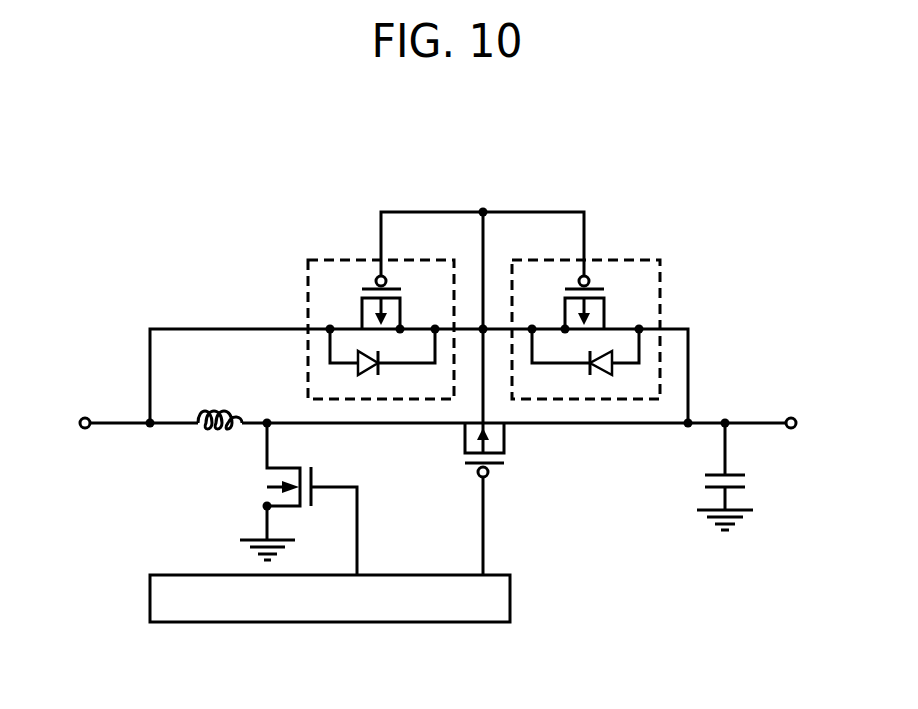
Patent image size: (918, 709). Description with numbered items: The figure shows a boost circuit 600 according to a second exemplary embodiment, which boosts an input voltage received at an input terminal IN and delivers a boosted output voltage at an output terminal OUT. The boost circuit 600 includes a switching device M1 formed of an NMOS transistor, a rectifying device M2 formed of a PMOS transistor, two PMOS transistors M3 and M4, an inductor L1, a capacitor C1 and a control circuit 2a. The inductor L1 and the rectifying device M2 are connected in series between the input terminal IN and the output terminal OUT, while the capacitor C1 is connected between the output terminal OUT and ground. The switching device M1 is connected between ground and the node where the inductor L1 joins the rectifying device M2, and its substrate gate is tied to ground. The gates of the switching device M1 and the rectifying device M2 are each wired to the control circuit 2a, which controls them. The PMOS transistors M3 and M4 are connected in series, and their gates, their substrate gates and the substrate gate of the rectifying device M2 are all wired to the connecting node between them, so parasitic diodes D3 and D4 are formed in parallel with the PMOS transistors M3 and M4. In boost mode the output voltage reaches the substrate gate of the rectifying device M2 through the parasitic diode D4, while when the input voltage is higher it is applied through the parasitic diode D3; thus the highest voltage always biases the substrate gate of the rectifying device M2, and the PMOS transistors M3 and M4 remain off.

The boost circuit 600 is at (648, 203).
The switching device M1 is at (298, 499).
The rectifying device M2 is at (500, 499).
The PMOS transistor M3 is at (299, 296).
The PMOS transistor M4 is at (670, 298).
The parasitic diode D3 is at (382, 360).
The parasitic diode D4 is at (585, 360).
The inductor L1 is at (220, 406).
The capacitor C1 is at (727, 476).
The control circuit 2a is at (413, 574).
The input terminal IN is at (89, 416).
The output terminal OUT is at (793, 415).